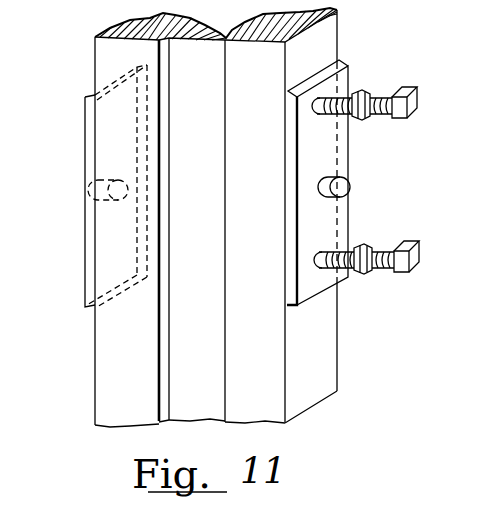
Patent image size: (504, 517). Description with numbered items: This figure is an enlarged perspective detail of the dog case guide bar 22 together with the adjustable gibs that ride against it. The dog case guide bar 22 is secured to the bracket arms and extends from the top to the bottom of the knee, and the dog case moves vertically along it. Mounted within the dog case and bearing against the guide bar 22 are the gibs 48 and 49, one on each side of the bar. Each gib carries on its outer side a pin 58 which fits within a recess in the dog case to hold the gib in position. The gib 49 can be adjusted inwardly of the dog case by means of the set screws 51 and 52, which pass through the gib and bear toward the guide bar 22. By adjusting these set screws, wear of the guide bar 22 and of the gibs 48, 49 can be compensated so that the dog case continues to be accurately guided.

The dog case guide bar 22 is at (320, 45).
The gib 48 is at (85, 198).
The gib 49 is at (315, 282).
The set screw 51 is at (413, 103).
The set screw 52 is at (415, 262).
The pin 58 is at (350, 187).